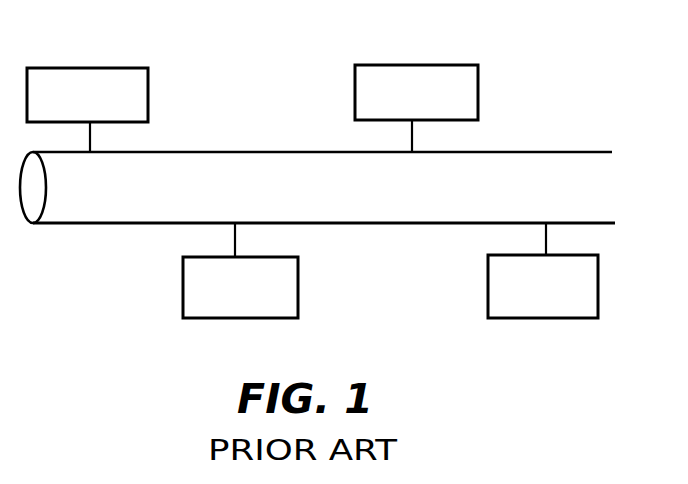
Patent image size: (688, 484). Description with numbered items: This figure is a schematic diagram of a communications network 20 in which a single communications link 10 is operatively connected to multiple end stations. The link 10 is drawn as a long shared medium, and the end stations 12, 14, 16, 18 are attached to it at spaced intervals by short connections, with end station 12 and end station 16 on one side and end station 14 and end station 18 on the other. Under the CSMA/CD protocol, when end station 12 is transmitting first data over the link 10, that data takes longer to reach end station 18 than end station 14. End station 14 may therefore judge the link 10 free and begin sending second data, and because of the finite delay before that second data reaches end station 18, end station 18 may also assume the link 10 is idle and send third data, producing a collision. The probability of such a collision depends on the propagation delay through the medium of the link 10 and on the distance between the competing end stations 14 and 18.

The link 10 is at (162, 204).
The end station 12 is at (98, 109).
The end station 14 is at (248, 299).
The device 16 is at (426, 109).
The end station 18 is at (557, 299).
The communications network 20 is at (575, 86).